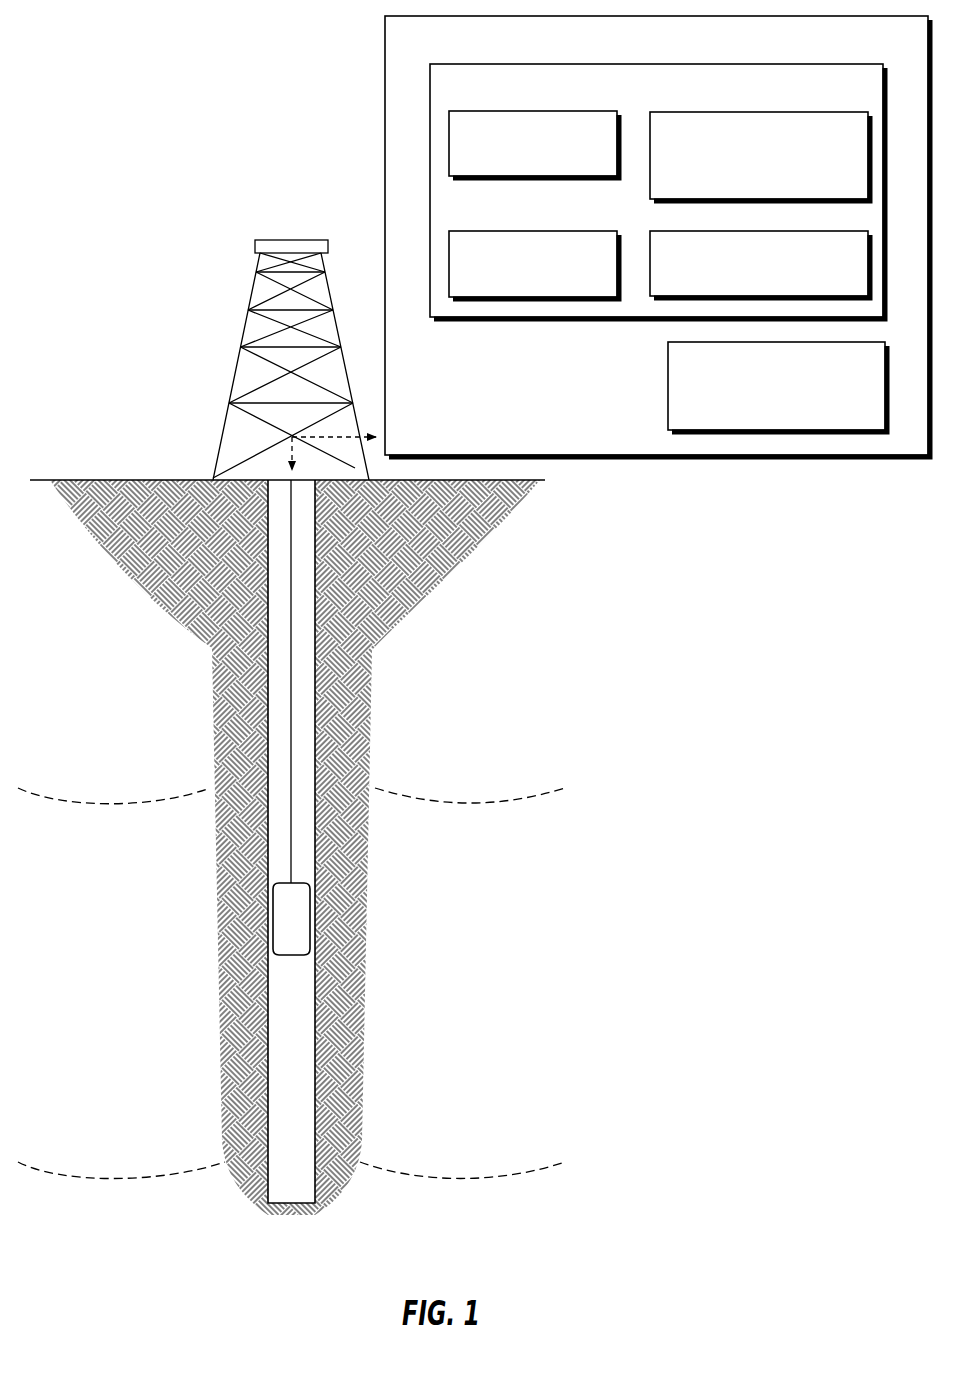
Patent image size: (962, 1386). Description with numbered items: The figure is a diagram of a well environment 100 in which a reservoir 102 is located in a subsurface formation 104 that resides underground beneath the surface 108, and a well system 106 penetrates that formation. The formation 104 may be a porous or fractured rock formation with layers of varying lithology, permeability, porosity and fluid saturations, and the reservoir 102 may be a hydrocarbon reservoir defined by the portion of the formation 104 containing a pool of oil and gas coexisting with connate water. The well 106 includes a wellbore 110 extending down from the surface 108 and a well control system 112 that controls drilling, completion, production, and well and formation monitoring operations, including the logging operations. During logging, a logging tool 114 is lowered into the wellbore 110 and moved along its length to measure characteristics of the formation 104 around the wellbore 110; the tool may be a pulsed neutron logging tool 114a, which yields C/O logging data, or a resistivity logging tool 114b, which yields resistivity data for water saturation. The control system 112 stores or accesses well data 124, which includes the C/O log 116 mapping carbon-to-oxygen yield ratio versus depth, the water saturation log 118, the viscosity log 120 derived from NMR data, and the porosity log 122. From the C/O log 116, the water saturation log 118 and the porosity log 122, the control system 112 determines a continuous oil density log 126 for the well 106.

The well environment 100 is at (126, 78).
The reservoir 102 is at (460, 1005).
The subsurface formation 104 is at (384, 564).
The well system 106 is at (184, 338).
The surface 108 is at (526, 485).
The wellbore 110 is at (290, 1208).
The well control system 112 is at (725, 48).
The logging tool 114 is at (410, 918).
The pulsed neutron logging tool 114a is at (291, 901).
The resistivity logging tool 114b is at (320, 917).
The C/O log 116 is at (553, 165).
The water saturation log 118 is at (778, 192).
The viscosity log 120 is at (553, 288).
The porosity log 122 is at (778, 288).
The well data 124 is at (612, 98).
The continuous oil density log 126 is at (798, 422).